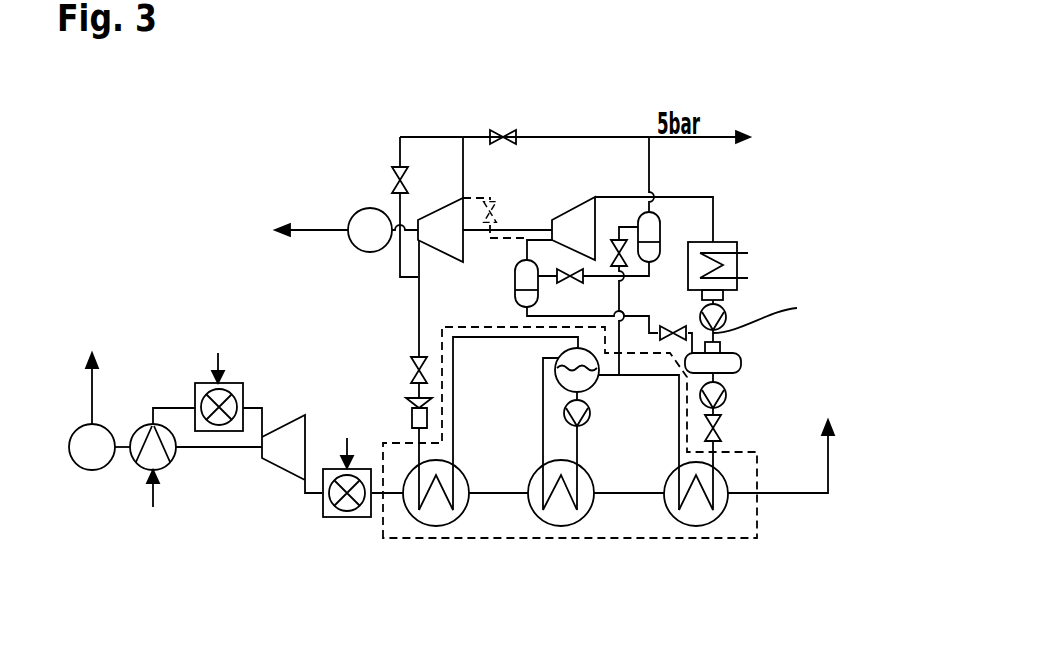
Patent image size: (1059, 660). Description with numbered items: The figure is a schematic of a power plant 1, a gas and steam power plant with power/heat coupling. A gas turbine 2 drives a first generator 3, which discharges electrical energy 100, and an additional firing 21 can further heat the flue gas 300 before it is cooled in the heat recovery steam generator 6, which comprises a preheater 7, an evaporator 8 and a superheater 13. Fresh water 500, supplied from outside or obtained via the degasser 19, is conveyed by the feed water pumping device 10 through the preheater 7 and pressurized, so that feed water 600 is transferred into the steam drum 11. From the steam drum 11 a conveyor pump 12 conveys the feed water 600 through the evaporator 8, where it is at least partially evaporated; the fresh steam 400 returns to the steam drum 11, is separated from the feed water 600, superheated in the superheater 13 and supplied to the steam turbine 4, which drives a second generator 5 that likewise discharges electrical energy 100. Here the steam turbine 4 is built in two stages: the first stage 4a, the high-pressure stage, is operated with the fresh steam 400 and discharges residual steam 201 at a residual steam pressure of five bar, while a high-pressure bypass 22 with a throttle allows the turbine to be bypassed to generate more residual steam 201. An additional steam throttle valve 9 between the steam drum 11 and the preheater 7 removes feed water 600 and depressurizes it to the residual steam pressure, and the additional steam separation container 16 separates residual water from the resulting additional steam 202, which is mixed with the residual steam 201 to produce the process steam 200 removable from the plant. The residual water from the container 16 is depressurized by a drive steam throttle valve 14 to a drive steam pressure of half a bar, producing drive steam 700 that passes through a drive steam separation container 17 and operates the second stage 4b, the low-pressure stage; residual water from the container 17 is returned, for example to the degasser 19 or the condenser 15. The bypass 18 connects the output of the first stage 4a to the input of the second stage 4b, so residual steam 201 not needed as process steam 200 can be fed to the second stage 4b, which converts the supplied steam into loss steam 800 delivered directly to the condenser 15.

The power plant 1 is at (153, 163).
The gas turbine 2 is at (192, 473).
The first generator 3 is at (92, 470).
The steam turbine 4 is at (548, 75).
The first stage 4a is at (437, 211).
The second stage 4b is at (567, 212).
The second generator 5 is at (356, 208).
The heat recovery steam generator 6 is at (758, 540).
The preheater 7 is at (705, 526).
The evaporator 8 is at (545, 527).
The additional steam throttle valve 9 is at (617, 270).
The feed water pumping device 10 is at (723, 405).
The steam drum 11 is at (600, 392).
The conveyor pump 12 is at (586, 422).
The superheater 13 is at (440, 527).
The drive steam throttle valve 14 is at (575, 268).
The condenser 15 is at (737, 247).
The additional steam separation container 16 is at (660, 197).
The drive steam separation container 17 is at (513, 295).
The bypass 18 is at (493, 197).
The degasser 19 is at (740, 353).
The additional firing 21 is at (316, 506).
The high-pressure bypass 22 is at (392, 173).
The electrical energy 100 is at (303, 228).
The process steam 200 is at (722, 137).
The residual steam 201 is at (636, 137).
The additional steam 202 is at (652, 150).
The flue gas 300 is at (828, 462).
The fresh steam 400 is at (419, 340).
The fresh water 500 is at (797, 308).
The feed water 600 is at (673, 418).
The drive steam 700 is at (525, 248).
The loss steam 800 is at (714, 213).